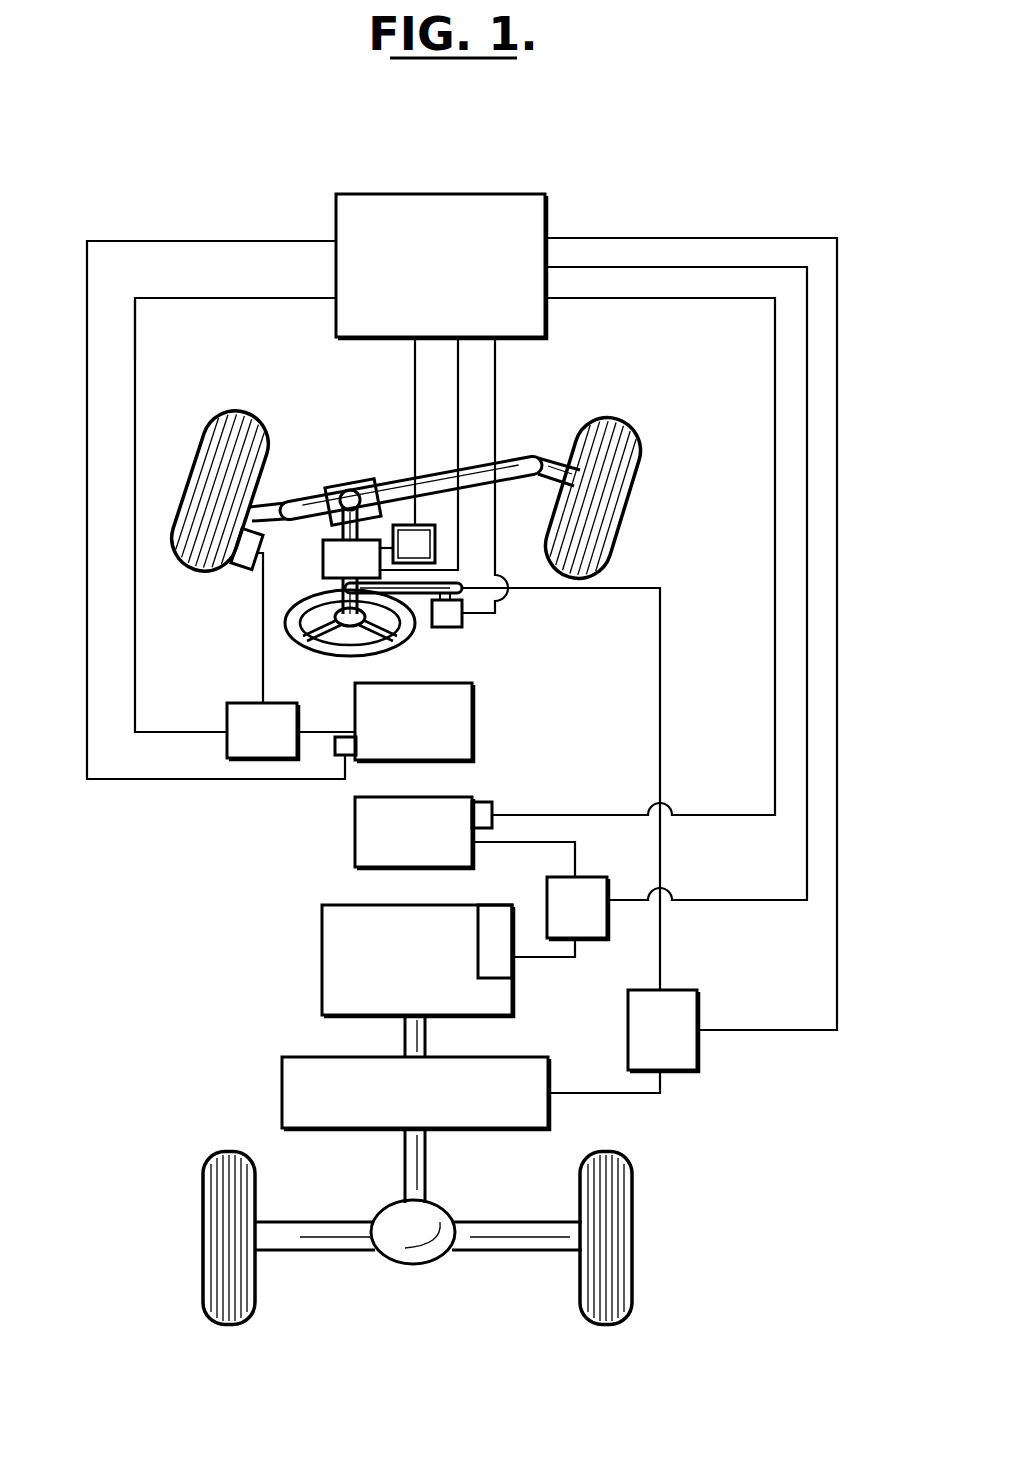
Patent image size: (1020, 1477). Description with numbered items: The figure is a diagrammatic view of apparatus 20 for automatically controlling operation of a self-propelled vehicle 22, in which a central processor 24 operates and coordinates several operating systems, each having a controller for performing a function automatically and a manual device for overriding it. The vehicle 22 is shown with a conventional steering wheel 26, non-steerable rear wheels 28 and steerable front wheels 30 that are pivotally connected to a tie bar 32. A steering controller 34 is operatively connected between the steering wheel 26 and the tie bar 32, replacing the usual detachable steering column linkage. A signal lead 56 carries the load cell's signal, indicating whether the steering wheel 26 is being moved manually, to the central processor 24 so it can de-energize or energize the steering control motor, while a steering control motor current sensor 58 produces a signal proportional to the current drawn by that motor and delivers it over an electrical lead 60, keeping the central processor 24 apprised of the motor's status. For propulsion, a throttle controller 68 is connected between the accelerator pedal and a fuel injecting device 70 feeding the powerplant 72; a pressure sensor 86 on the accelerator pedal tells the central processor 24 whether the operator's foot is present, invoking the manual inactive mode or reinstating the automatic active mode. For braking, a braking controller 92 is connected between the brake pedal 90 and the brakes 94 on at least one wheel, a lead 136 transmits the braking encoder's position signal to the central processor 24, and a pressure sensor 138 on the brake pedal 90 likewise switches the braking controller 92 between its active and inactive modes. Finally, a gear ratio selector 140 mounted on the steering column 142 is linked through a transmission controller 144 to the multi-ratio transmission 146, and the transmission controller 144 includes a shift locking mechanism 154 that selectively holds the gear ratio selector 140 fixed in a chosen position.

The apparatus 20 is at (750, 192).
The self-propelled vehicle 22 is at (198, 1318).
The central processor 24 is at (520, 192).
The steering wheel 26 is at (350, 655).
The rear wheels 28 is at (640, 1256).
The front wheels 30 is at (628, 430).
The tie bar 32 is at (525, 462).
The steering controller 34 is at (337, 574).
The signal lead 56 is at (460, 374).
The steering control motor current sensor 58 is at (402, 558).
The electrical lead 60 is at (415, 373).
The throttle controller 68 is at (563, 916).
The fuel injecting device 70 is at (493, 922).
The powerplant 72 is at (320, 945).
The pressure sensor 86 is at (487, 808).
The brake pedal 90 is at (473, 720).
The braking controller 92 is at (248, 745).
The brakes 94 is at (237, 560).
The lead 136 is at (135, 333).
The pressure sensor 138 is at (342, 780).
The gear ratio selector 140 is at (410, 594).
The steering column 142 is at (338, 586).
The transmission controller 144 is at (641, 1036).
The multi-ratio transmission 146 is at (282, 1078).
The shift locking mechanism 154 is at (450, 616).